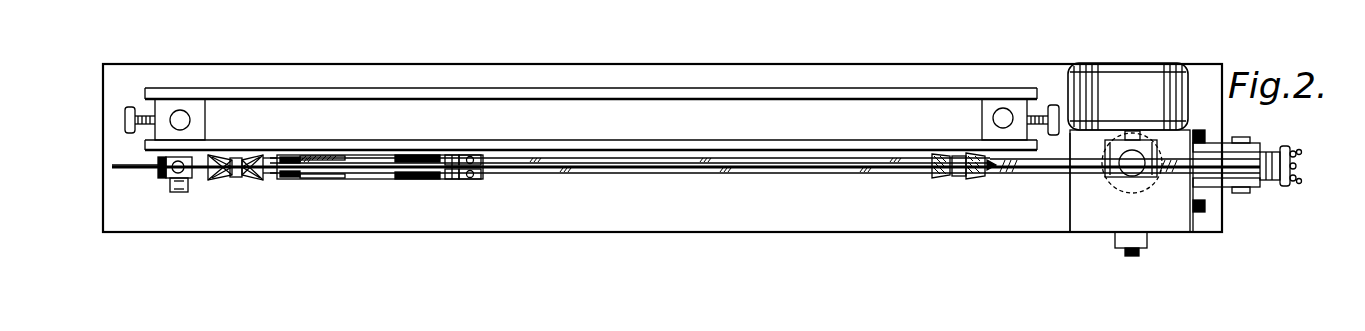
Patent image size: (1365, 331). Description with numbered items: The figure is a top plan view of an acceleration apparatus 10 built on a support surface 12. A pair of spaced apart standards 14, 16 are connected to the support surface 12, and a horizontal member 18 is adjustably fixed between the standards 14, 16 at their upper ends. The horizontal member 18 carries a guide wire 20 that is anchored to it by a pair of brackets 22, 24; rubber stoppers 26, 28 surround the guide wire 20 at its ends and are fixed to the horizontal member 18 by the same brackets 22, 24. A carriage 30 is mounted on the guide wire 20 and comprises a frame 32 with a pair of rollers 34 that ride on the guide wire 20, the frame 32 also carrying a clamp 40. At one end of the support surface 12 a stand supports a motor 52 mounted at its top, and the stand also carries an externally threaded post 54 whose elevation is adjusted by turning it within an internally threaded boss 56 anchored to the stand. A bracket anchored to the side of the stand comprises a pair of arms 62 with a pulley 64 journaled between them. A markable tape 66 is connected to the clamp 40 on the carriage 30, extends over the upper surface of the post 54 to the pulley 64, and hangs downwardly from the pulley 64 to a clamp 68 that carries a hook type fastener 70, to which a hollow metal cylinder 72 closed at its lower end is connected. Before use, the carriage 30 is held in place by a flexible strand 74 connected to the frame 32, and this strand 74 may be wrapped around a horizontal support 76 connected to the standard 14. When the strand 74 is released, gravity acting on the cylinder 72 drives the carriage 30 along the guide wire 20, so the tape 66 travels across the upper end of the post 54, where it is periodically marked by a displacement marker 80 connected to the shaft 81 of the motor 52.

The acceleration apparatus 10 is at (1203, 244).
The support surface 12 is at (805, 220).
The standard 14 is at (180, 110).
The standard 16 is at (1003, 110).
The horizontal member 18 is at (693, 92).
The guide wire 20 is at (760, 170).
The bracket 22 is at (246, 178).
The bracket 24 is at (958, 177).
The rubber stopper 26 is at (219, 179).
The rubber stopper 28 is at (940, 176).
The carriage 30 is at (403, 179).
The frame 32 is at (460, 179).
The rollers 34 is at (456, 156).
The clamp 40 is at (483, 176).
The motor 52 is at (1094, 89).
The externally threaded post 54 is at (1118, 178).
The internally threaded boss 56 is at (1136, 176).
The arms 62 is at (1222, 186).
The pulley 64 is at (1266, 182).
The markable tape 66 is at (1207, 167).
The clamp 68 is at (1296, 180).
The hook type fastener 70 is at (1296, 166).
The hollow metal cylinder 72 is at (1296, 156).
The flexible strand 74 is at (128, 166).
The horizontal support 76 is at (167, 178).
The displacement marker 80 is at (1100, 180).
The shaft 81 is at (1114, 134).